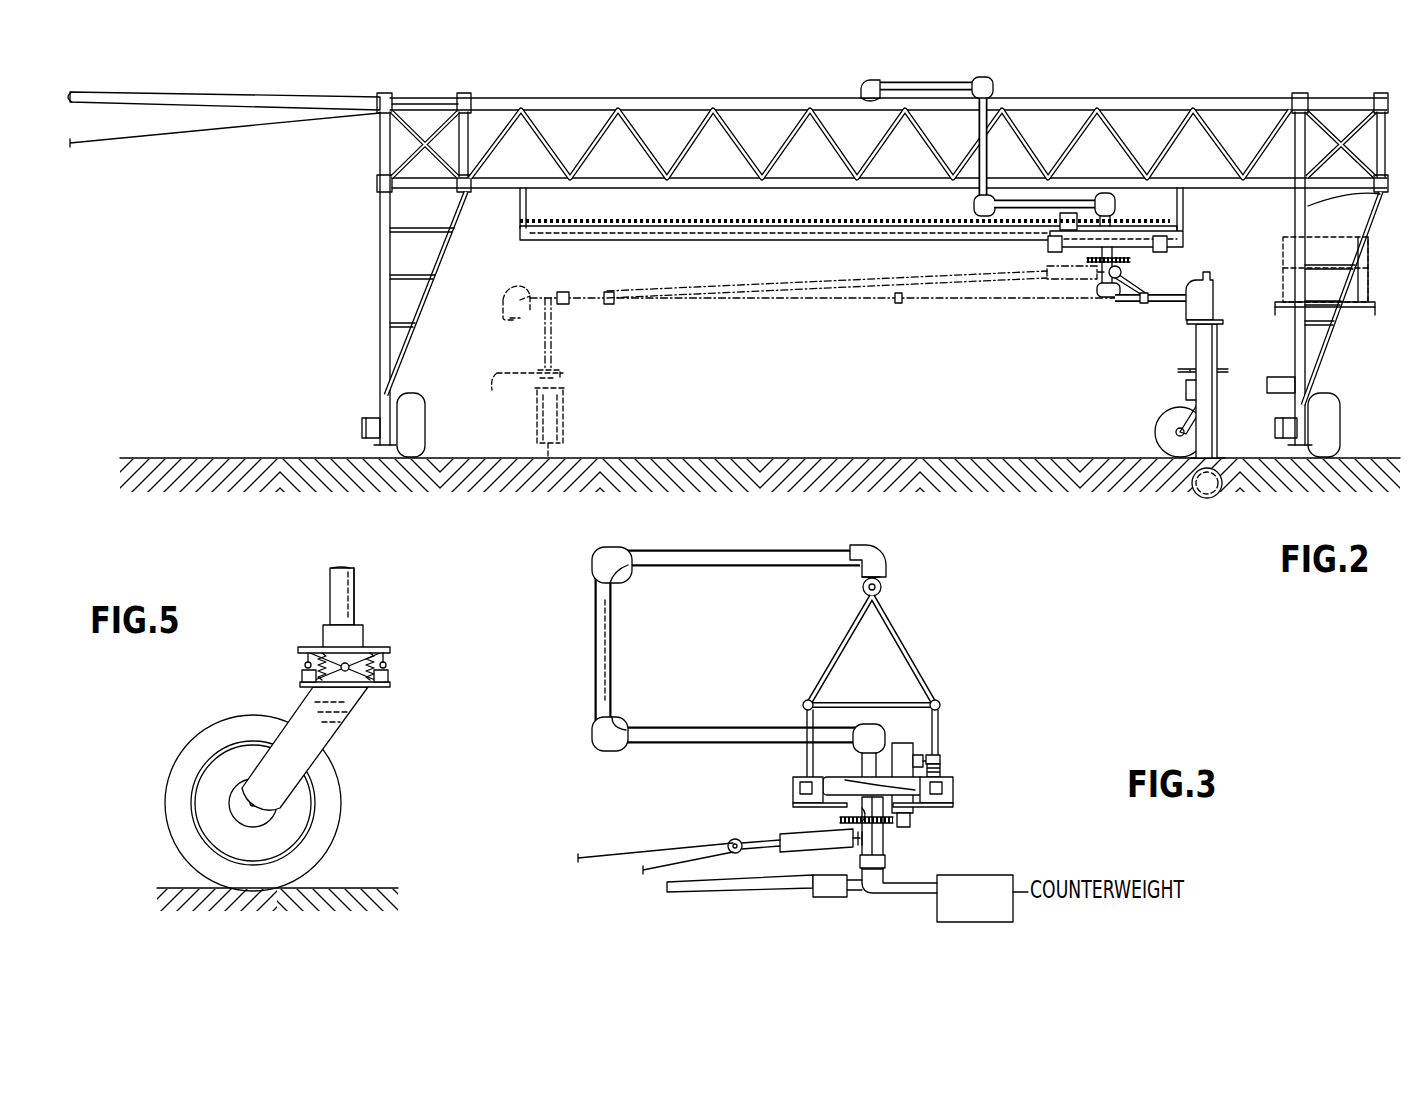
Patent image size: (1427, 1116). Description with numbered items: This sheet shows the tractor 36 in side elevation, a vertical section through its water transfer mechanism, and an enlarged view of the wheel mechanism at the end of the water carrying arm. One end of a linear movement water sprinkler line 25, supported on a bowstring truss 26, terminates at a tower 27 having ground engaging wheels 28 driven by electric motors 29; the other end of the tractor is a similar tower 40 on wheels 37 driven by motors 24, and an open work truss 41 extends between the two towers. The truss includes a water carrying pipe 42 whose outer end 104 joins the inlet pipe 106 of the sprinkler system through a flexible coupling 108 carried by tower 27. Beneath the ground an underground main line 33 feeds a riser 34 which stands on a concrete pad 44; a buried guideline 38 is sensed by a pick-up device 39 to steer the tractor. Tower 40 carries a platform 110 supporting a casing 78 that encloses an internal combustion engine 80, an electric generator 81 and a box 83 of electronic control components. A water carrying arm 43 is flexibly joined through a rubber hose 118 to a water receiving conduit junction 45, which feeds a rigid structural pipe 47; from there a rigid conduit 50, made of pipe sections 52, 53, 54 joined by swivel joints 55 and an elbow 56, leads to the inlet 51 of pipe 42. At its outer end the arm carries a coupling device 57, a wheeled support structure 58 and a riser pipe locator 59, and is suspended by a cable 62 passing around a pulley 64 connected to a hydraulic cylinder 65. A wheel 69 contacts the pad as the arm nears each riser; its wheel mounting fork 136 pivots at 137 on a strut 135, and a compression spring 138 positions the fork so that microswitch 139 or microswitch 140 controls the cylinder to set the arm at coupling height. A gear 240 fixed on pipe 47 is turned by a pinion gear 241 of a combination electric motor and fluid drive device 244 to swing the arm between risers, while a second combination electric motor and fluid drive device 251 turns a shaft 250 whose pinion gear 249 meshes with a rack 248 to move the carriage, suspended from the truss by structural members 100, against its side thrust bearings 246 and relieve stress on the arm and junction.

In FIG. 2, the electric motors 24 is at (1275, 430).
In FIG. 2, the linear movement water sprinkler line 25 is at (198, 88).
In FIG. 2, the bowstring truss 26 is at (72, 148).
In FIG. 2, the tower 27 is at (378, 272).
In FIG. 2, the ground engaging wheels 28 is at (425, 412).
In FIG. 2, the electric motors 29 is at (362, 425).
In FIG. 2, the underground main line 33 is at (1202, 498).
In FIG. 2, the riser 34 is at (1226, 357).
In FIG. 2, the tractor 36 is at (860, 116).
In FIG. 2, the ground engaging wheels 37 is at (1340, 432).
In FIG. 2, the guideline 38 is at (1276, 478).
In FIG. 5, the guideline 38 is at (277, 899).
In FIG. 2, the pick-up device 39 is at (1272, 388).
In FIG. 2, the tower 40 is at (1295, 214).
In FIG. 2, the open work truss 41 is at (1130, 156).
In FIG. 3, the open work truss 41 is at (906, 646).
In FIG. 2, the water carrying pipe 42 is at (686, 96).
In FIG. 3, the water carrying pipe 42 is at (882, 590).
In FIG. 2, the water carrying arm 43 is at (872, 302).
In FIG. 3, the water carrying arm 43 is at (736, 892).
In FIG. 2, the concrete pad 44 is at (1232, 462).
In FIG. 2, the water receiving conduit junction 45 is at (1104, 292).
In FIG. 3, the water receiving conduit junction 45 is at (886, 870).
In FIG. 2, the rigid structural pipe 47 is at (1098, 290).
In FIG. 3, the rigid structural pipe 47 is at (860, 802).
In FIG. 2, the rigid conduit 50 is at (1044, 188).
In FIG. 2, the inlet 51 is at (862, 80).
In FIG. 3, the inlet 51 is at (880, 558).
In FIG. 2, the pipe section 52 is at (1014, 194).
In FIG. 3, the pipe section 52 is at (702, 748).
In FIG. 2, the pipe section 53 is at (980, 120).
In FIG. 3, the pipe section 53 is at (612, 668).
In FIG. 2, the pipe section 54 is at (922, 82).
In FIG. 3, the pipe section 54 is at (755, 548).
In FIG. 2, the swivel joints 55 is at (985, 80).
In FIG. 3, the swivel joints 55 is at (602, 550).
In FIG. 2, the swivel joint elbow 56 is at (1115, 201).
In FIG. 3, the swivel joint elbow 56 is at (860, 724).
In FIG. 2, the coupling device 57 is at (503, 296).
In FIG. 2, the wheeled support structure 58 is at (561, 348).
In FIG. 5, the wheeled support structure 58 is at (330, 584).
In FIG. 2, the riser pipe locator 59 is at (1190, 372).
In FIG. 2, the cable 62 is at (820, 288).
In FIG. 3, the cable 62 is at (632, 852).
In FIG. 2, the pulley 64 is at (1010, 262).
In FIG. 3, the pulley 64 is at (738, 854).
In FIG. 2, the hydraulic cylinder 65 is at (1050, 270).
In FIG. 3, the hydraulic cylinder 65 is at (818, 850).
In FIG. 2, the wheel 69 is at (558, 446).
In FIG. 5, the wheel 69 is at (338, 816).
In FIG. 2, the casing 78 is at (1376, 302).
In FIG. 2, the internal combustion engine 80 is at (1366, 290).
In FIG. 2, the electric generator 81 is at (1286, 280).
In FIG. 2, the box of electronic components 83 is at (1336, 240).
In FIG. 2, the structural members 100 is at (520, 206).
In FIG. 3, the structural members 100 is at (806, 716).
In FIG. 2, the outer end 104 is at (470, 96).
In FIG. 2, the inlet pipe 106 is at (370, 94).
In FIG. 2, the flexible coupling 108 is at (400, 96).
In FIG. 2, the platform 110 is at (1356, 310).
In FIG. 3, the rubber hose 118 is at (822, 890).
In FIG. 5, the strut 135 is at (358, 598).
In FIG. 5, the wheel mounting fork 136 is at (326, 722).
In FIG. 5, the pivot 137 is at (360, 652).
In FIG. 5, the compression spring 138 is at (312, 650).
In FIG. 5, the microswitch 139 is at (386, 666).
In FIG. 5, the microswitch 140 is at (305, 664).
In FIG. 2, the gear 240 is at (1135, 258).
In FIG. 3, the gear 240 is at (888, 824).
In FIG. 3, the pinion gear 241 is at (912, 820).
In FIG. 2, the combination electric motor and fluid drive device 244 is at (1115, 241).
In FIG. 3, the combination electric motor and fluid drive device 244 is at (832, 788).
In FIG. 2, the side thrust bearings 246 is at (1107, 244).
In FIG. 3, the side thrust bearings 246 is at (794, 780).
In FIG. 2, the rack 248 is at (794, 222).
In FIG. 3, the rack 248 is at (942, 770).
In FIG. 3, the pinion gear 249 is at (942, 760).
In FIG. 3, the shaft 250 is at (934, 758).
In FIG. 2, the combination electric motor and fluid drive device 251 is at (1072, 212).
In FIG. 3, the combination electric motor and fluid drive device 251 is at (900, 742).